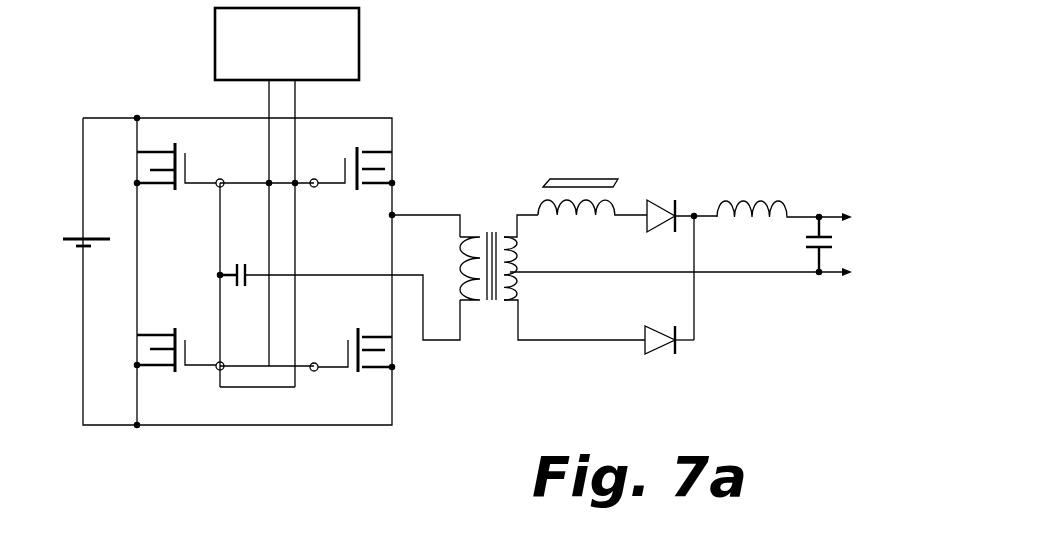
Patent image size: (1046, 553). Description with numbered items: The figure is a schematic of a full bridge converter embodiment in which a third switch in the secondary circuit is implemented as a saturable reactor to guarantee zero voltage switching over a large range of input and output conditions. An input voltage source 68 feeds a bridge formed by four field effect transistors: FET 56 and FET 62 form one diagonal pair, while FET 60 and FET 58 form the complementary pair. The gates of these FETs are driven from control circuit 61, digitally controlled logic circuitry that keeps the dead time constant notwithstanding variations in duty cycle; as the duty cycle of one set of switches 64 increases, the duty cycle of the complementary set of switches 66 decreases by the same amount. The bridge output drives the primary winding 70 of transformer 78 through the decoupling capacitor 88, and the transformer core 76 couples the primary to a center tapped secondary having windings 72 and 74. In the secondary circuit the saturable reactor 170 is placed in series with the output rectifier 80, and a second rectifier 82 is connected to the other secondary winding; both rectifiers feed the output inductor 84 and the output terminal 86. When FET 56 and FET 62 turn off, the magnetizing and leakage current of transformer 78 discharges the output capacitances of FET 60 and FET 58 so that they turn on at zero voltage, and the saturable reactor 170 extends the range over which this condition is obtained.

The control circuit 61 is at (359, 50).
The FET Q3 60 is at (129, 166).
The FET Q4 62 is at (128, 357).
The FET Q1 56 is at (398, 170).
The FET Q2 58 is at (398, 366).
The set of switches 64 is at (318, 176).
The complementary set of switches 66 is at (247, 150).
The input voltage source 68 is at (74, 246).
The capacitor Cr 88 is at (238, 289).
The primary winding L1 70 is at (457, 266).
The secondary winding L2 72 is at (528, 267).
The secondary winding L3 74 is at (525, 297).
The transformer core 76 is at (500, 235).
The transformer 78 is at (615, 251).
The saturable reactor Ls1 170 is at (606, 176).
The output rectifier Do1 80 is at (683, 210).
The output diode D02 82 is at (663, 355).
The output inductor LD1 84 is at (790, 200).
The output terminal 86 is at (838, 226).